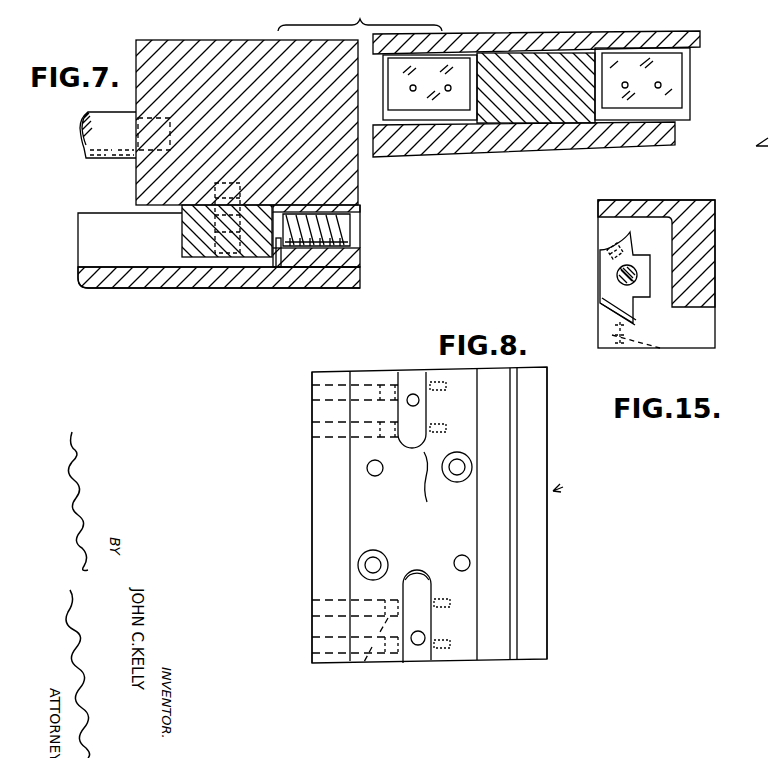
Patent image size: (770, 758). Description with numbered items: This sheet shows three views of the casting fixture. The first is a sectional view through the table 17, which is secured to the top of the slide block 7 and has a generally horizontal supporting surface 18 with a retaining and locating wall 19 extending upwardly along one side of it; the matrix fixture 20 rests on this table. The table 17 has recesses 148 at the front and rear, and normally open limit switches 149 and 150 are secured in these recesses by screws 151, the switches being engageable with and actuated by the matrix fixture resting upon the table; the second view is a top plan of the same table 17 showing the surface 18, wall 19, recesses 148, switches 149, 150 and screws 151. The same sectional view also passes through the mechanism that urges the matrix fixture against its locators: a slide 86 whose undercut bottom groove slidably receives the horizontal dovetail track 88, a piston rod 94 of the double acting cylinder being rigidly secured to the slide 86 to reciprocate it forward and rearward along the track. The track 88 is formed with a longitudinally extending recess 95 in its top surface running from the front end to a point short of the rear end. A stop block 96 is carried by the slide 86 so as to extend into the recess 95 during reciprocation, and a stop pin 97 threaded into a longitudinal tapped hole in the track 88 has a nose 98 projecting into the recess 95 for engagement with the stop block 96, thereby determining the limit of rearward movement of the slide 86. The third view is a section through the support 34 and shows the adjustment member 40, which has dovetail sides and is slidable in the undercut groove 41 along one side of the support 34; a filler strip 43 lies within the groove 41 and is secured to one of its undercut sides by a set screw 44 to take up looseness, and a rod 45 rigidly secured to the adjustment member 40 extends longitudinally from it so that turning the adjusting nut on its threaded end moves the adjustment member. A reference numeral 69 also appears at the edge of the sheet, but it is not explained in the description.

In FIG. 7, the slide block 7 is at (527, 150).
In FIG. 7, the table 17 is at (583, 118).
In FIG. 8, the table 17 is at (563, 487).
In FIG. 8, the supporting surface 18 is at (323, 537).
In FIG. 8, the retaining and locating wall 19 is at (542, 570).
In FIG. 7, the matrix fixture 20 is at (705, 37).
In FIG. 15, the support 34 is at (705, 240).
In FIG. 15, the adjustment member 40 is at (612, 296).
In FIG. 15, the undercut groove 41 is at (618, 243).
In FIG. 15, the filler strip 43 is at (633, 316).
In FIG. 15, the set screw 44 is at (655, 346).
In FIG. 15, the rod 45 is at (616, 276).
In FIG. 7, the arm 69 is at (769, 112).
In FIG. 7, the slide 86 is at (358, 176).
In FIG. 7, the dovetail track 88 is at (350, 257).
In FIG. 7, the piston rod 94 is at (103, 160).
In FIG. 7, the recess 95 is at (88, 247).
In FIG. 7, the stop block 96 is at (182, 241).
In FIG. 7, the stop pin 97 is at (340, 229).
In FIG. 7, the nose 98 is at (278, 268).
In FIG. 7, the recesses 148 is at (468, 118).
In FIG. 8, the recesses 148 is at (418, 572).
In FIG. 7, the limit switch 149 is at (690, 75).
In FIG. 8, the limit switch 149 is at (414, 375).
In FIG. 7, the limit switch 150 is at (400, 92).
In FIG. 8, the limit switch 150 is at (425, 660).
In FIG. 8, the screws 151 is at (380, 660).